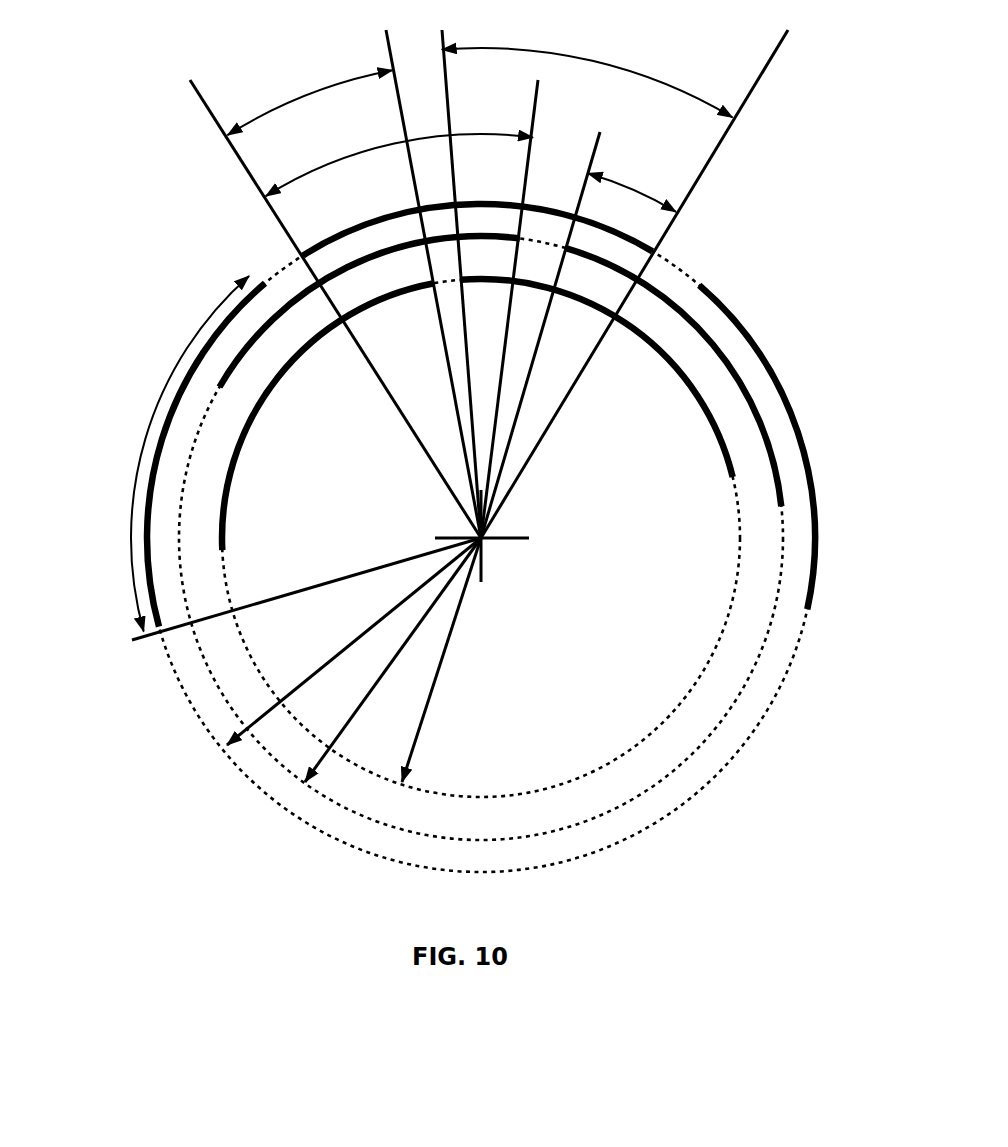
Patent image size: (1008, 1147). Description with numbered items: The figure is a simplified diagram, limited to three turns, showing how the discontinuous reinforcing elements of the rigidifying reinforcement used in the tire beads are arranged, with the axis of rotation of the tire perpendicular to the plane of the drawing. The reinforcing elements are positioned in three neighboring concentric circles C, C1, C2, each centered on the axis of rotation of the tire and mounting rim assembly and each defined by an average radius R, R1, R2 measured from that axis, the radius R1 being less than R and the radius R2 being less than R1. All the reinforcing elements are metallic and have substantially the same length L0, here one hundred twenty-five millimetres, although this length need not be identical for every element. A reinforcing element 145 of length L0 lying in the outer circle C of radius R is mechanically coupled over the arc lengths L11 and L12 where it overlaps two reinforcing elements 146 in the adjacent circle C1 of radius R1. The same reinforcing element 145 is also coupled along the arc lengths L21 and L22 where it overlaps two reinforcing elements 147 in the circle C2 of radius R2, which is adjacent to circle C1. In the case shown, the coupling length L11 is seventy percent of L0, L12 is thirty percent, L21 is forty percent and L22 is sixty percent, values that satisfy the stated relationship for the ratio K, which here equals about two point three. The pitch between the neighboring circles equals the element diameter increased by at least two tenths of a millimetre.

The reinforcing element 145 is at (348, 222).
The reinforcing elements 146 is at (238, 368).
The reinforcing elements 147 is at (288, 365).
The circle C is at (198, 708).
The circle C1 is at (280, 763).
The circle C2 is at (363, 768).
The average radius R is at (354, 641).
The average radius R1 is at (393, 660).
The average radius R2 is at (437, 660).
The length of reinforcing element L0 is at (176, 454).
The arc length L11 is at (399, 154).
The arc length L12 is at (632, 185).
The arc length L21 is at (309, 95).
The arc length L22 is at (587, 76).